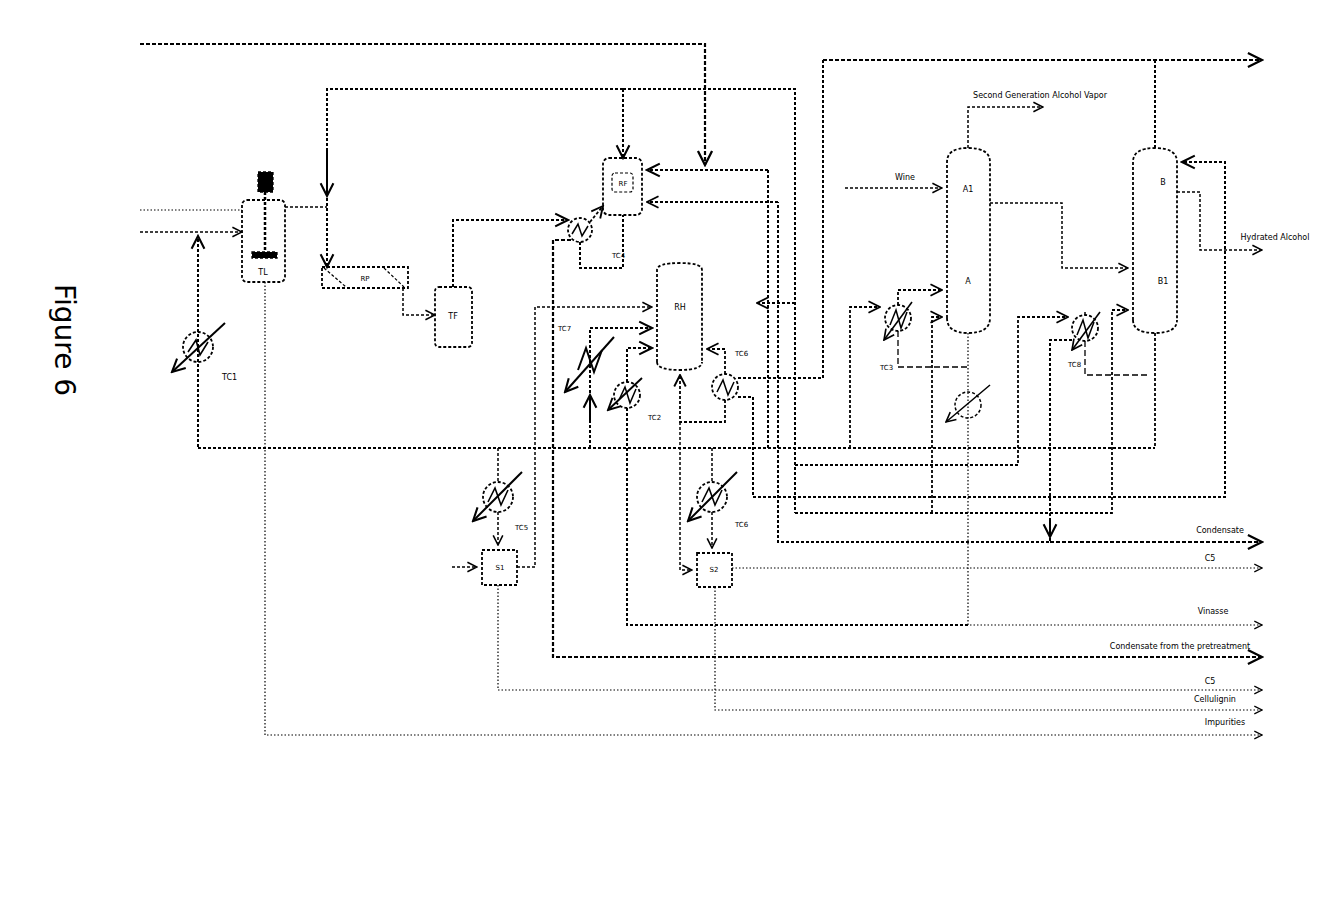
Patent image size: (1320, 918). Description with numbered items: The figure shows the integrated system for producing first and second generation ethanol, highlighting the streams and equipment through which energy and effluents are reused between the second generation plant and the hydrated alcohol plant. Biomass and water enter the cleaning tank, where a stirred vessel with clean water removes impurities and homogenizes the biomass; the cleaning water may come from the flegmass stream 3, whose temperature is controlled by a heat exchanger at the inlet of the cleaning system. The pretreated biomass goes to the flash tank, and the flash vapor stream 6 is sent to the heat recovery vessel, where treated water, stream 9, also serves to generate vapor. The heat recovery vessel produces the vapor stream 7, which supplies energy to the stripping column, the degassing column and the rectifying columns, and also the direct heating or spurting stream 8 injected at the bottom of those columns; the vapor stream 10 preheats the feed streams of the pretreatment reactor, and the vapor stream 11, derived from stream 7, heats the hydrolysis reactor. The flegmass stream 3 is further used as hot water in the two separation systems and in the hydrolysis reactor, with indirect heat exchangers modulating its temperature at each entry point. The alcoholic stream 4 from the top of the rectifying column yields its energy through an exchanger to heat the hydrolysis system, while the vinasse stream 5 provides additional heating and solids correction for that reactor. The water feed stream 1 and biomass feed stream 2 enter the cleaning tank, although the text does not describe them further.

The water feed 1 is at (182, 228).
The biomass feed 2 is at (182, 203).
The flegmass stream 3 is at (627, 44).
The alcoholic stream 4 is at (976, 57).
The vinasse (stillage) stream 5 is at (1157, 436).
The flash vapor stream 6 is at (848, 513).
The vapor stream 7 is at (671, 89).
The spurting stream 8 is at (492, 220).
The treated water stream 9 is at (880, 625).
The vapor stream 10 is at (456, 89).
The vapor stream 11 is at (752, 302).